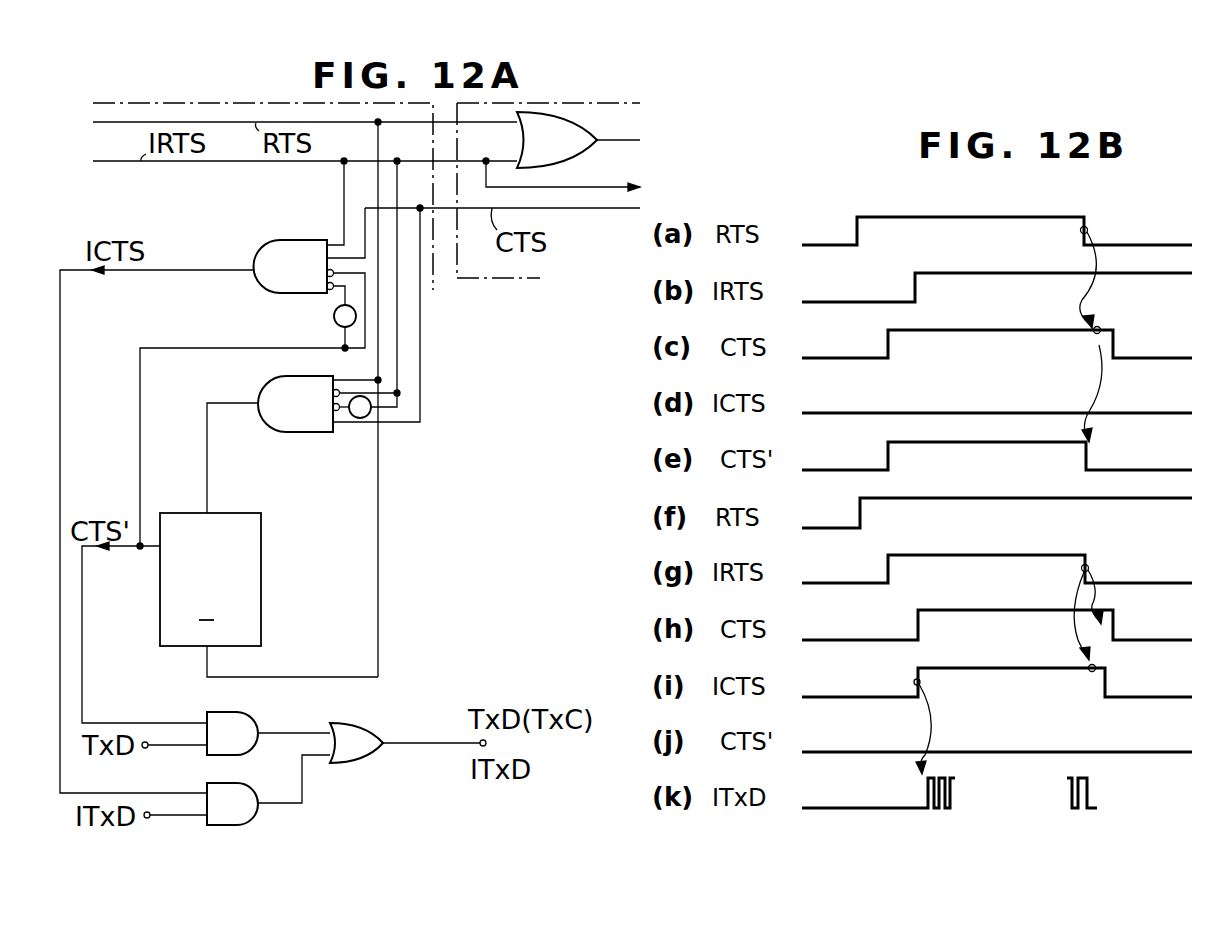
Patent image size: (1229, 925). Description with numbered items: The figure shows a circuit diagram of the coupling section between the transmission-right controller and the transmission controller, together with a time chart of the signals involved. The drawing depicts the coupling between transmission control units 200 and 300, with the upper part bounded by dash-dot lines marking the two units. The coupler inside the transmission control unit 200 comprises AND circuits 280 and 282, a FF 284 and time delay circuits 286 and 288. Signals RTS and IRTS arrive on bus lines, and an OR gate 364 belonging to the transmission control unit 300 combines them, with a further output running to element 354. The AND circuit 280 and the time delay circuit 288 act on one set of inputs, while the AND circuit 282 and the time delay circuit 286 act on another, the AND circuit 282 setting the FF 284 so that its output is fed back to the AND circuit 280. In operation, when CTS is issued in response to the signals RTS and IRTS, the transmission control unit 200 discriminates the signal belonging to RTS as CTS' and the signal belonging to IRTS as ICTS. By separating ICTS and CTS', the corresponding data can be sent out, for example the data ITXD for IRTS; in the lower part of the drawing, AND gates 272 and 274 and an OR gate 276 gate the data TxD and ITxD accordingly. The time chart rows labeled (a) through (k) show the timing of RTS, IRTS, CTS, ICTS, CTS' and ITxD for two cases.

The transmission control unit 200 is at (133, 103).
The transmission control unit 300 is at (571, 103).
The OR gate 364 (FIG. 8) 364 is at (600, 126).
The element 354 is at (591, 171).
The AND circuit 280 is at (272, 230).
The time delay circuit 288 is at (334, 318).
The AND circuit 282 is at (304, 433).
The time delay circuit 286 is at (361, 419).
The FF 284 is at (262, 530).
The AND gate 272 is at (256, 700).
The AND gate 274 is at (256, 815).
The OR gate 276 is at (363, 763).